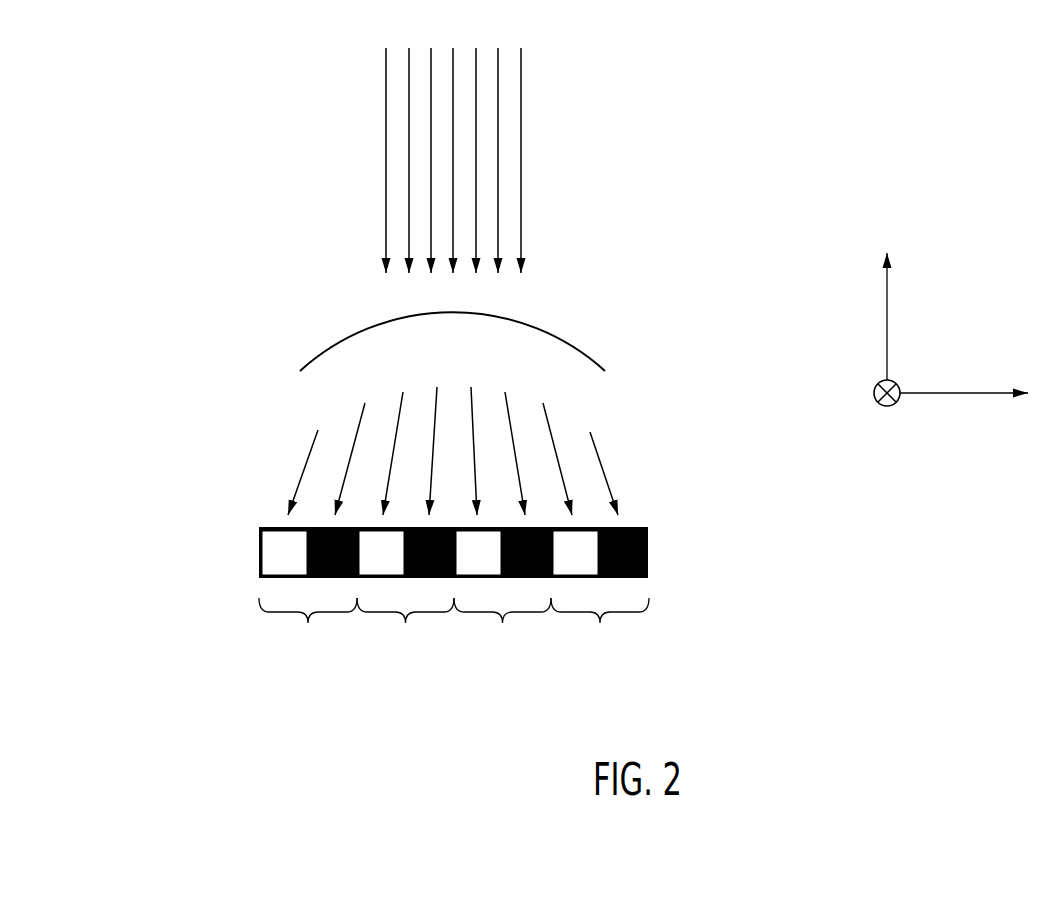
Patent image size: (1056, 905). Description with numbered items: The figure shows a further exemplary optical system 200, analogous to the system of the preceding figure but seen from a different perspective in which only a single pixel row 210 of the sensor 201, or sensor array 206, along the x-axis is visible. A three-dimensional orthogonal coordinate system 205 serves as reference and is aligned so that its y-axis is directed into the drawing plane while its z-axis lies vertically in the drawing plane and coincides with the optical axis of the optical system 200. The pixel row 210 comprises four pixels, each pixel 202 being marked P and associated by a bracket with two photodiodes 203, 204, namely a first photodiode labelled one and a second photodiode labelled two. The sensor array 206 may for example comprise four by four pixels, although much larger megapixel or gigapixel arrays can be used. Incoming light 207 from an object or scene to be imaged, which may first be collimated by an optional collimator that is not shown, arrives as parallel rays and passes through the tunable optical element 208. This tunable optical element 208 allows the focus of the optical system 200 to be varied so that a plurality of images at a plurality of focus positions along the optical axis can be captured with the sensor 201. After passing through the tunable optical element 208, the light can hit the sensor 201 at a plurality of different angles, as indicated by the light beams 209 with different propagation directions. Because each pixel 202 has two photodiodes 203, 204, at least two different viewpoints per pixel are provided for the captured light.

The optical system 200 is at (933, 636).
The sensor 201 is at (249, 555).
The pixel 202 is at (303, 676).
The photodiode 203 is at (594, 578).
The photodiode 204 is at (648, 545).
The three-dimensional orthogonal coordinate system 205 is at (885, 414).
The sensor array 206 is at (453, 552).
The incoming light 207 is at (539, 102).
The tunable optical element 208 is at (577, 344).
The light beams 209 is at (624, 452).
The pixel row 210 is at (453, 552).